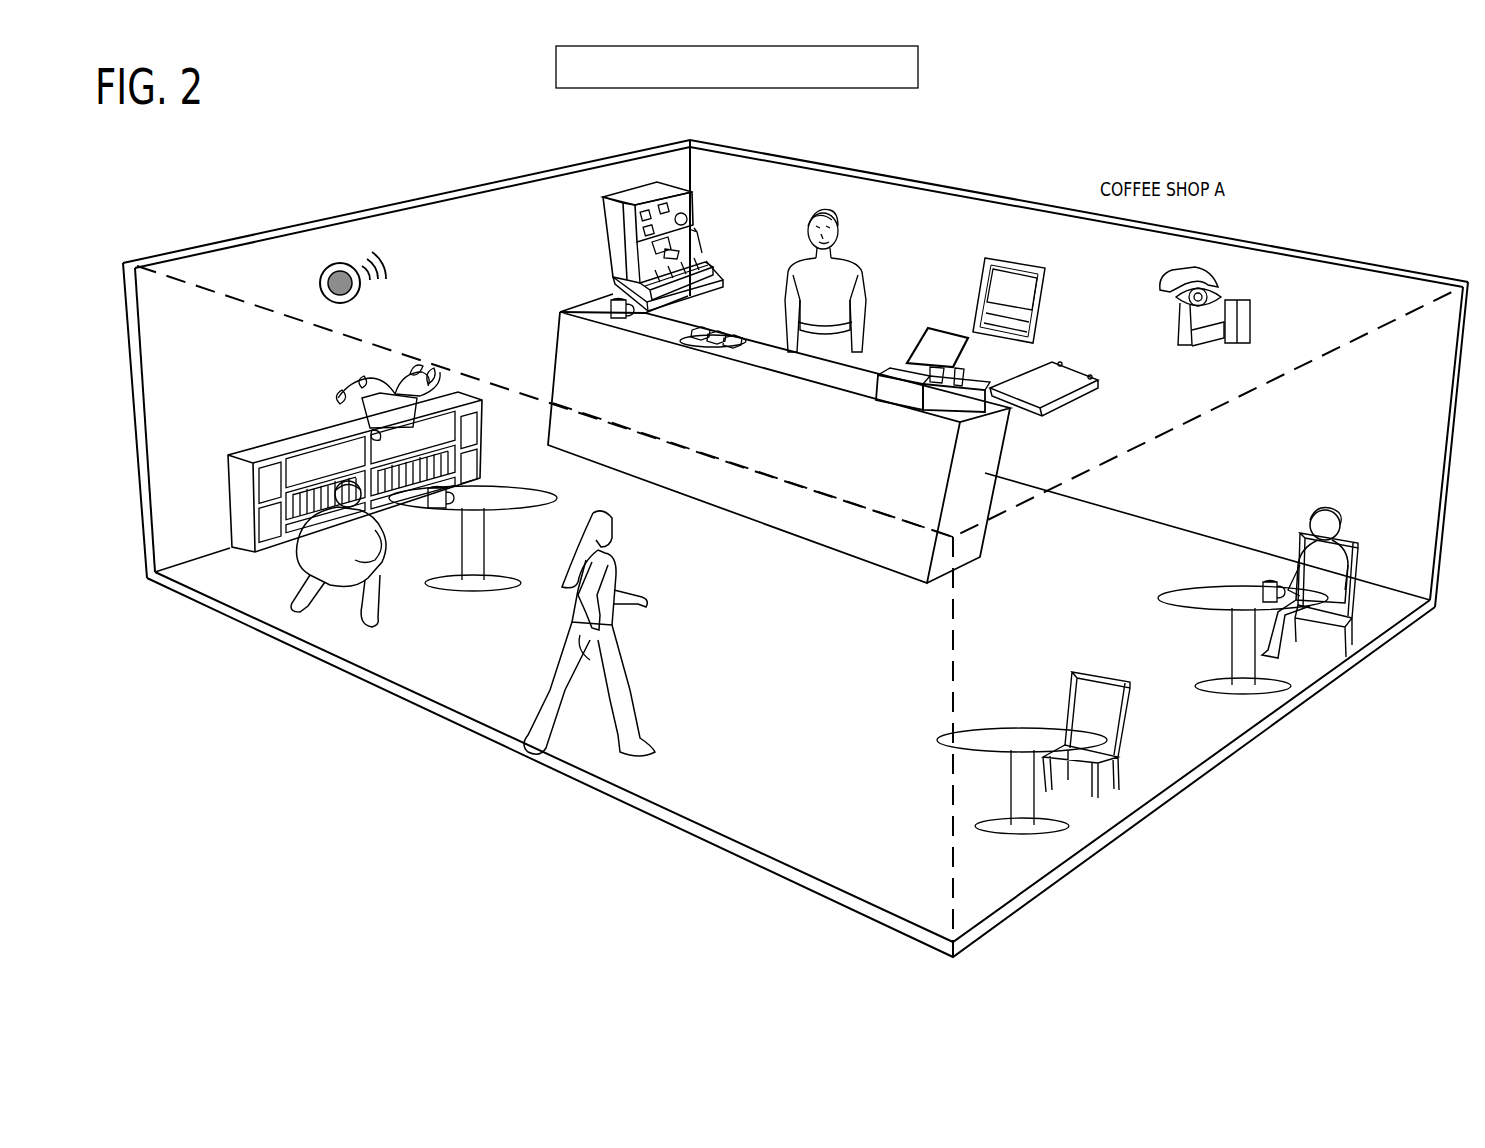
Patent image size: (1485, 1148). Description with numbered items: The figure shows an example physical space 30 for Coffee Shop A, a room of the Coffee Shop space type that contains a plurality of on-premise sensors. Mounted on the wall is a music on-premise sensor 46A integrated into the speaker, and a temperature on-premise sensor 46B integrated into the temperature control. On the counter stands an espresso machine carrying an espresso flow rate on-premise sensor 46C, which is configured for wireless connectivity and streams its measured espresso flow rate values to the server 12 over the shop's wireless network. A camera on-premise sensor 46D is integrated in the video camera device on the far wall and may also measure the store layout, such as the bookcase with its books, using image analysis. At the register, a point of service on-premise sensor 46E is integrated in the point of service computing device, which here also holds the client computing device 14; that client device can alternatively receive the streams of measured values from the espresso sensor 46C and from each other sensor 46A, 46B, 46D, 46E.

The server 12 is at (922, 352).
The client computing device 14 is at (960, 352).
The physical space 30 is at (1384, 159).
The music on-premise sensor 46A is at (342, 303).
The temperature on-premise sensor 46B is at (1015, 260).
The espresso flow rate on-premise sensor 46C is at (693, 207).
The camera on-premise sensor 46D is at (1250, 322).
The point of service on-premise sensor 46E is at (945, 328).